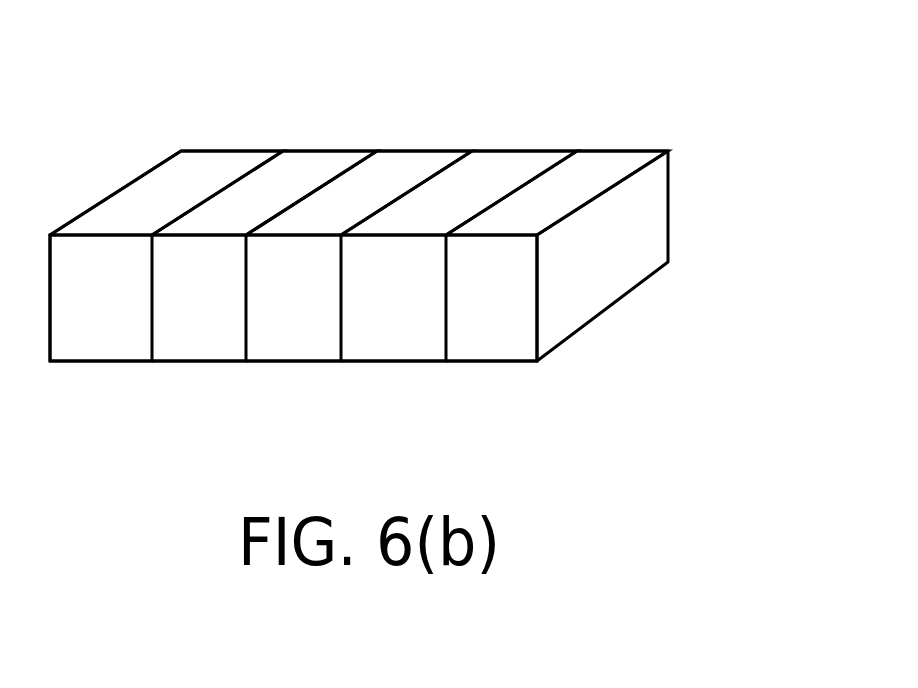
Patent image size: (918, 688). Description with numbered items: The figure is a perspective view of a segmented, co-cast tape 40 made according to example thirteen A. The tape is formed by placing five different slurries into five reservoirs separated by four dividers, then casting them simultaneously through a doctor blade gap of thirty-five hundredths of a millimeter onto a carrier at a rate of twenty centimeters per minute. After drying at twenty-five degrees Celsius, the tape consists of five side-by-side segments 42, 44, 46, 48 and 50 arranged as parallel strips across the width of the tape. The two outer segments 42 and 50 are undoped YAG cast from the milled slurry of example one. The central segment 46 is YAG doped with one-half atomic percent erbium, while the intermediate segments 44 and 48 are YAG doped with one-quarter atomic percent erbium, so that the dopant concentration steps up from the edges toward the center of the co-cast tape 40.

The co-cast tape 40 is at (458, 130).
The segment 42 is at (102, 362).
The segment 44 is at (198, 362).
The segment 46 is at (296, 362).
The segment 48 is at (398, 362).
The segment 50 is at (490, 362).